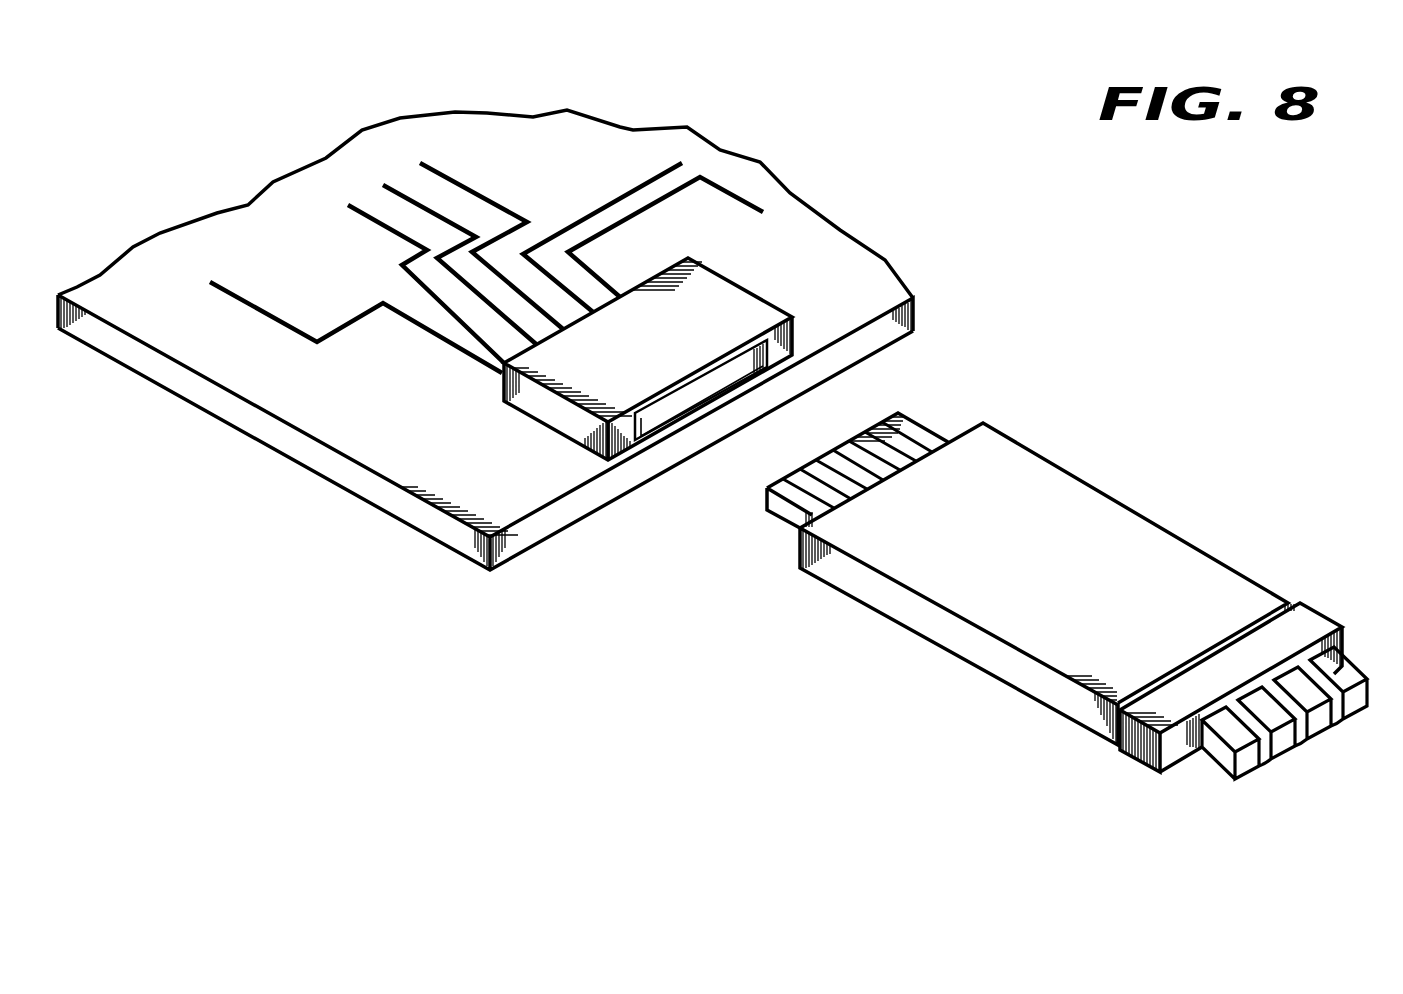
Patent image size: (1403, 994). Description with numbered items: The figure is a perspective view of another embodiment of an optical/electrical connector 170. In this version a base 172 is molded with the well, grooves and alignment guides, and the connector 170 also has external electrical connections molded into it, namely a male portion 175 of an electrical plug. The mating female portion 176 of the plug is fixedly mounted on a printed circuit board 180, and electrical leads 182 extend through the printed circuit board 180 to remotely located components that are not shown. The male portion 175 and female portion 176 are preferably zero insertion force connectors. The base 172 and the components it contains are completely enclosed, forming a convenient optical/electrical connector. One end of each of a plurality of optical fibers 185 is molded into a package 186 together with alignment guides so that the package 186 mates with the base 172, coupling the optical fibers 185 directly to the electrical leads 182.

The optical/electrical connector 170 is at (1143, 252).
The base 172 is at (888, 620).
The male portion 175 is at (925, 428).
The mating female portion 176 is at (703, 336).
The printed circuit board 180 is at (845, 235).
The electrical leads 182 is at (353, 323).
The optical fibers 185 is at (1230, 758).
The module connector 186 is at (1323, 618).